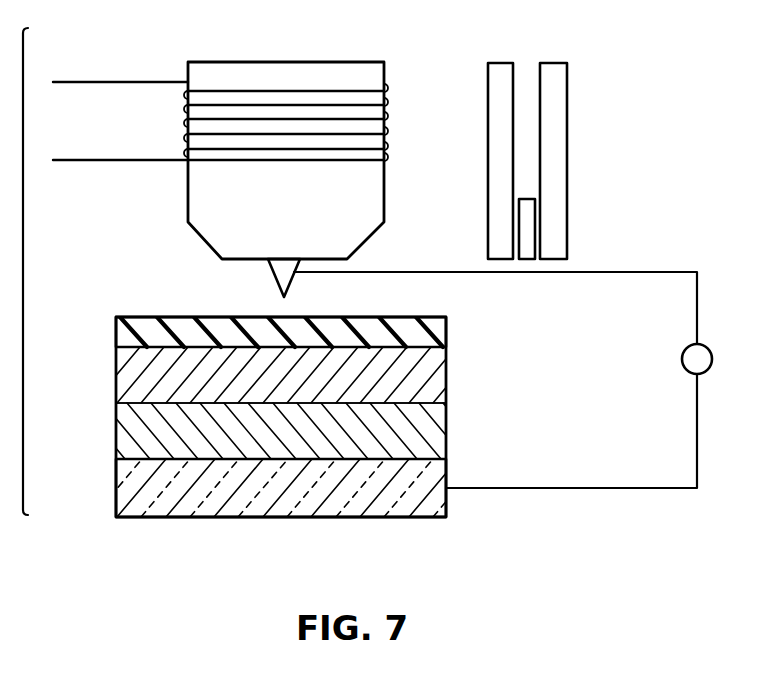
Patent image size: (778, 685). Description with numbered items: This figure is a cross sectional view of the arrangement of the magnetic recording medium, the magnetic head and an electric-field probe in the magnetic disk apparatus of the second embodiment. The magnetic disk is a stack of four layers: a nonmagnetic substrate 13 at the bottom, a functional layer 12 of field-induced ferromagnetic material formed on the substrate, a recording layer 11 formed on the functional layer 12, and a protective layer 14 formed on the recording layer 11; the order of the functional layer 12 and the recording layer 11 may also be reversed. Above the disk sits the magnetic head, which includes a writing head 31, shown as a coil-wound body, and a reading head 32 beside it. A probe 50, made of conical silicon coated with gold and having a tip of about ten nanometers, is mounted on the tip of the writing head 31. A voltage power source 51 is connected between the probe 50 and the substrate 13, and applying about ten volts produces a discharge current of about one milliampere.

The recording layer 11 is at (116, 378).
The functional layer 12 is at (116, 439).
The nonmagnetic substrate 13 is at (116, 491).
The protective layer 14 is at (116, 336).
The writing head 31 is at (388, 61).
The reading head 32 is at (487, 61).
The probe 50 is at (270, 277).
The voltage power source 51 is at (680, 359).